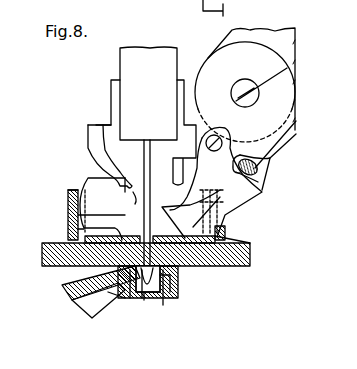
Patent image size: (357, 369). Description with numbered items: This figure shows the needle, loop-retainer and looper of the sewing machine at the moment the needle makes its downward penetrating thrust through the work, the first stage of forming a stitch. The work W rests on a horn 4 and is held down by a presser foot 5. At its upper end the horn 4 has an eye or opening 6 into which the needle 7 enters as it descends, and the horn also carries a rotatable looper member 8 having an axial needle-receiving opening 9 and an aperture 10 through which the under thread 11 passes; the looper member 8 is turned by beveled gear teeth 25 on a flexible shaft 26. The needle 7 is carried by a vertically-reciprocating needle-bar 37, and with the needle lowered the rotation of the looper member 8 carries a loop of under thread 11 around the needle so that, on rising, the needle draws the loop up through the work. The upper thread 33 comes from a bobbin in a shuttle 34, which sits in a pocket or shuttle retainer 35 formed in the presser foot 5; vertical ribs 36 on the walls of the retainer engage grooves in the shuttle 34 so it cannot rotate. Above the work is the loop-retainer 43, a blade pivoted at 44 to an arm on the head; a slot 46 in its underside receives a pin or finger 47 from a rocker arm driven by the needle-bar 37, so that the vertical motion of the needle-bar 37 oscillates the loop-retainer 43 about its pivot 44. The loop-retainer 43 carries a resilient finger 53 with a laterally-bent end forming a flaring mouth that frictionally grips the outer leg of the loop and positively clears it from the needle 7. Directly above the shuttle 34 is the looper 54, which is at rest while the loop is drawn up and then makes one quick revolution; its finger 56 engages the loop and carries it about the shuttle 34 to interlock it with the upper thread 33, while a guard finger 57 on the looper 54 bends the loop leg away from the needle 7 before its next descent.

The horn 4 is at (62, 285).
The presser foot 5 is at (78, 229).
The eye or opening 6 is at (177, 272).
The needle 7 is at (135, 191).
The looper member 8 is at (130, 300).
The needle-receiving opening 9 is at (142, 302).
The aperture 10 is at (172, 298).
The under thread 11 is at (164, 308).
The beveled gear teeth 25 is at (110, 300).
The flexible shaft 26 is at (80, 302).
The upper thread 33 is at (135, 215).
The shuttle 34 is at (93, 178).
The shuttle retainer 35 is at (68, 201).
The vertical ribs 36 is at (76, 190).
The needle-bar 37 is at (128, 63).
The loop-retainer 43 is at (205, 270).
The pivot 44 is at (259, 85).
The slot 46 is at (262, 172).
The pin or finger 47 is at (286, 144).
The resilient finger 53 is at (228, 213).
The looper 54 is at (88, 125).
The finger 56 is at (90, 148).
The guard finger 57 is at (244, 198).
The work W is at (250, 258).